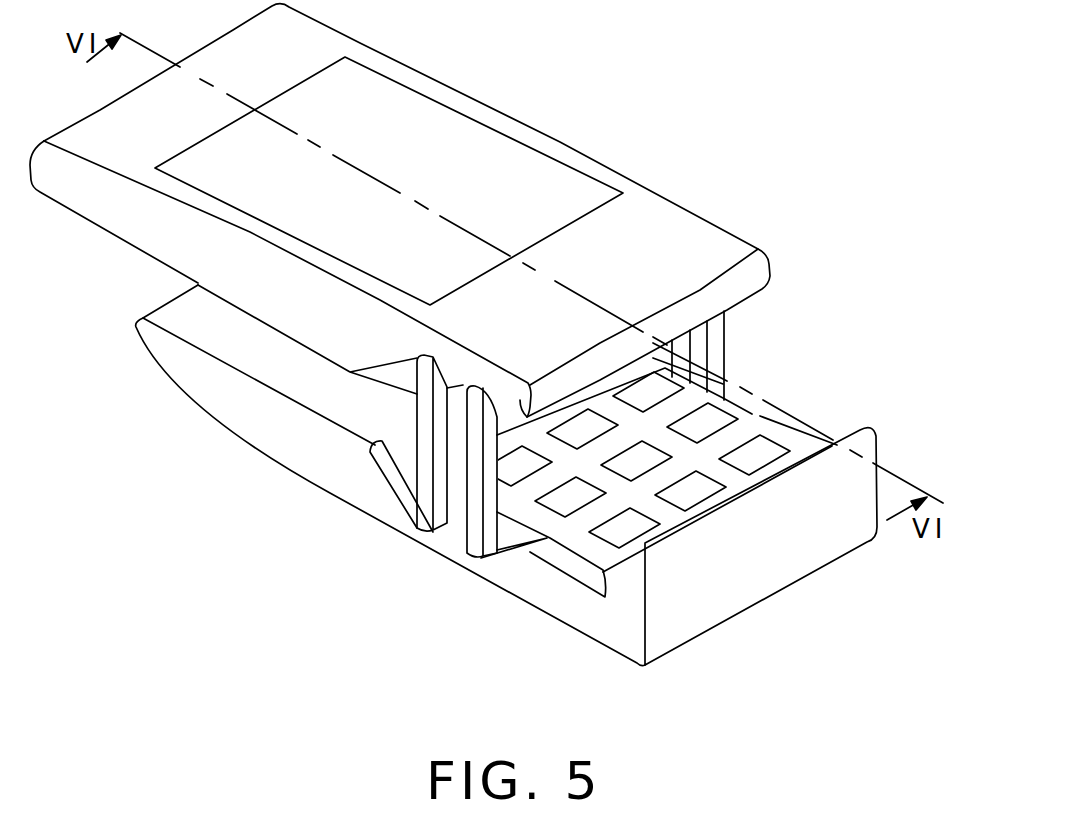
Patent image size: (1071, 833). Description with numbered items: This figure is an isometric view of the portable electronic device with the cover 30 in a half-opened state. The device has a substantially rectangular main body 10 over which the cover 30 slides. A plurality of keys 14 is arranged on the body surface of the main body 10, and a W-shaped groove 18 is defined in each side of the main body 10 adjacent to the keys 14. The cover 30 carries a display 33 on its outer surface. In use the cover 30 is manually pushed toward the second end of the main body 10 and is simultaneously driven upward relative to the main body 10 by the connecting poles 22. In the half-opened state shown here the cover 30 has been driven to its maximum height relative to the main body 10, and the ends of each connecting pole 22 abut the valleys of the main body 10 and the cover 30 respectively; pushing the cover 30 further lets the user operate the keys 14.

The main body 10 is at (257, 418).
The keys 14 is at (623, 528).
The W-shaped groove 18 is at (390, 478).
The connecting pole 22 is at (475, 533).
The cover 30 is at (678, 256).
The display 33 is at (407, 122).